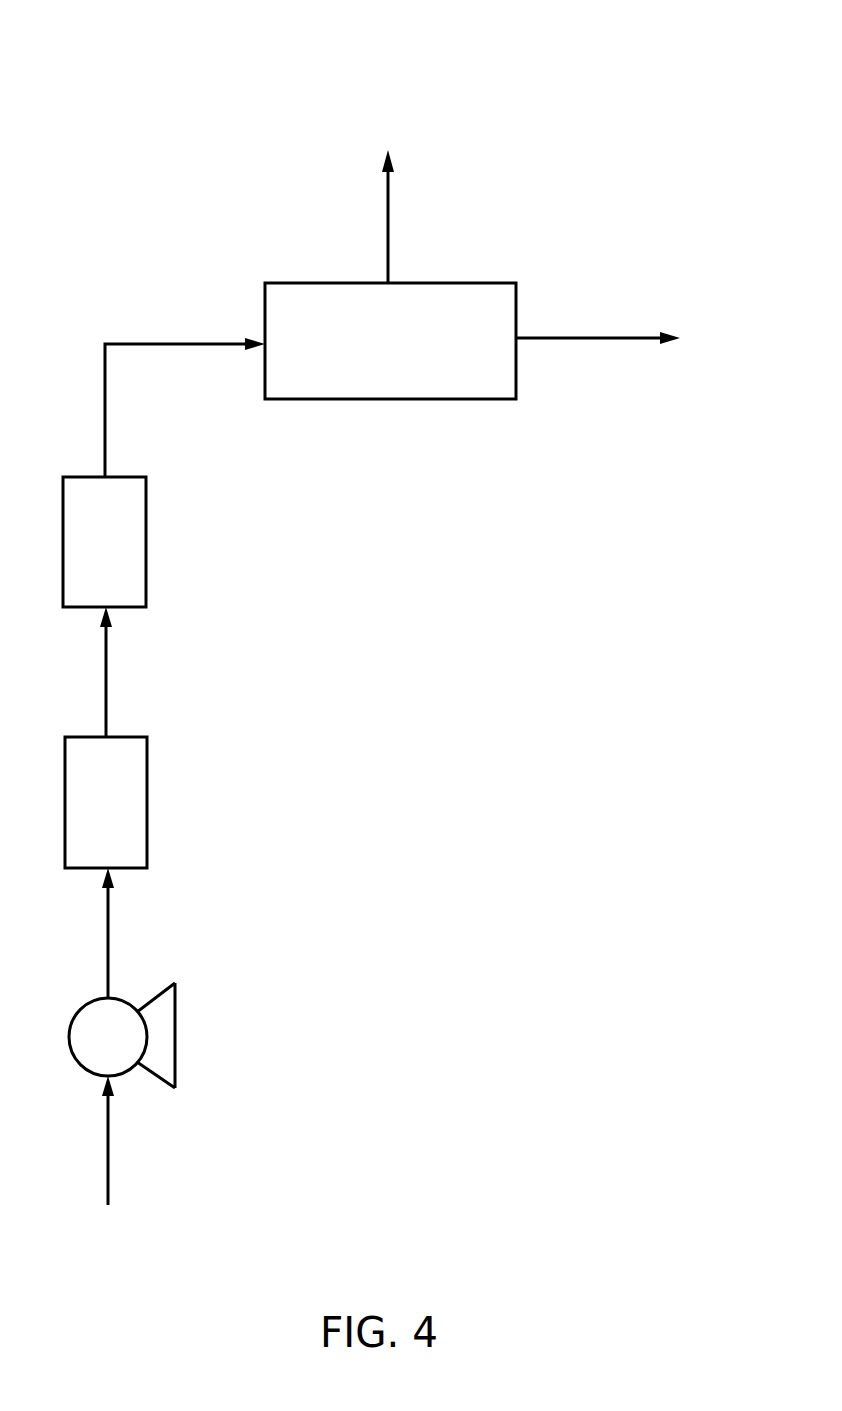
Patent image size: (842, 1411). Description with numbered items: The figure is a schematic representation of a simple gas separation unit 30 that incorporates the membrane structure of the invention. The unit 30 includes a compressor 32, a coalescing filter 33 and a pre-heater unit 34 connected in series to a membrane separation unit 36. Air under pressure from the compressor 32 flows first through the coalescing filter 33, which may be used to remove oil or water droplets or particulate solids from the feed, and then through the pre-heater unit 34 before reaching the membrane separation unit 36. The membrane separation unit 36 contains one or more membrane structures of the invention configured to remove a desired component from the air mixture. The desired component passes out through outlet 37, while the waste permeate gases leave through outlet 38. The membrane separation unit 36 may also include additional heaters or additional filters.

The gas separation unit 30 is at (633, 54).
The compressor 32 is at (175, 1036).
The coalescing filter 33 is at (147, 800).
The pre-heater unit 34 is at (146, 541).
The membrane separation unit 36 is at (472, 283).
The outlet 37 is at (590, 338).
The outlet 38 is at (388, 224).